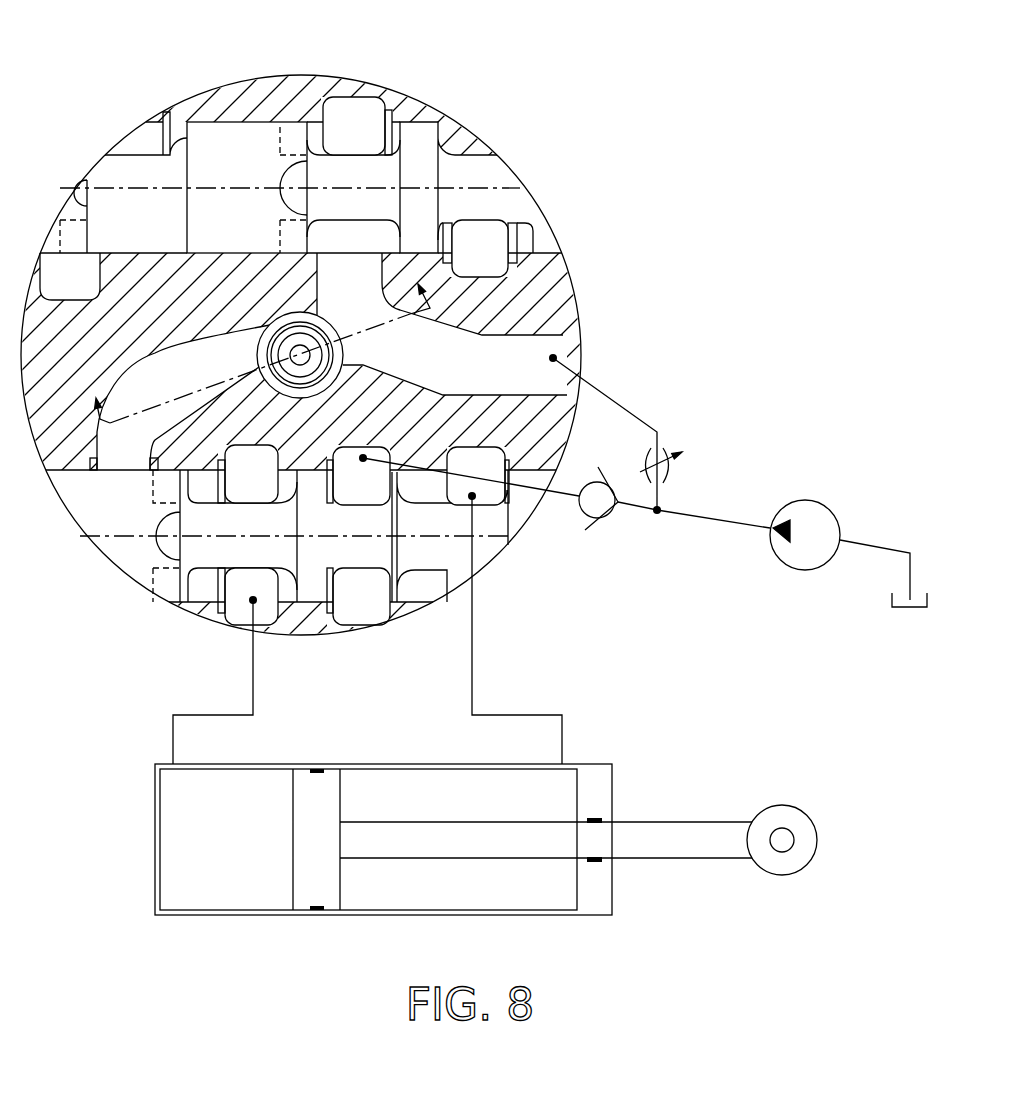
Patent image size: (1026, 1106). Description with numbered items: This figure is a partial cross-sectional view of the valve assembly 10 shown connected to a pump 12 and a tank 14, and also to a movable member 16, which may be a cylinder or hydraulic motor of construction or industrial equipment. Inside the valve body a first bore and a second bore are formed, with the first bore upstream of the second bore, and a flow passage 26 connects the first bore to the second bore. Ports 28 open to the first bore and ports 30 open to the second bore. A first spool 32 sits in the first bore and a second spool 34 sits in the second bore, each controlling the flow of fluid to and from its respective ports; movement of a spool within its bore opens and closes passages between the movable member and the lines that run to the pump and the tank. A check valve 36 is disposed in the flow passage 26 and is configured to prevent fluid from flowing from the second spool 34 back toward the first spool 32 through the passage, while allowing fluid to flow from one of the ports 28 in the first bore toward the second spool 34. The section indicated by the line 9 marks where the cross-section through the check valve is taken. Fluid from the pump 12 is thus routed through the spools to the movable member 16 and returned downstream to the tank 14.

The section line 9- 9 is at (257, 339).
The valve assembly 10 is at (538, 103).
The pump 12 is at (785, 567).
The tank 14 is at (917, 607).
The movable member 16 is at (157, 840).
The flow passage 26 is at (190, 352).
The ports 28 is at (238, 473).
The ports 30 is at (363, 117).
The first spool 32 is at (225, 530).
The second spool 34 is at (260, 145).
The check valve 36 is at (283, 313).